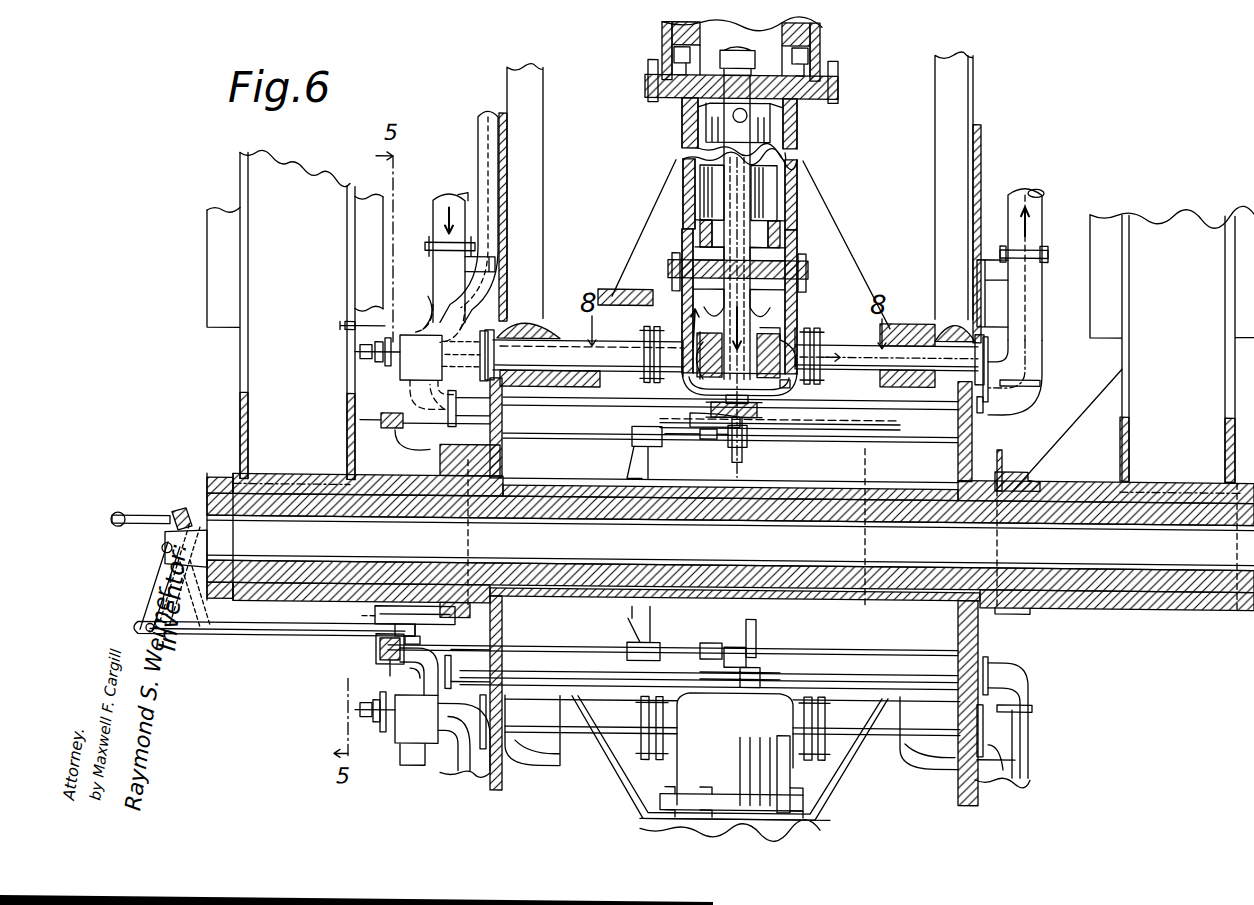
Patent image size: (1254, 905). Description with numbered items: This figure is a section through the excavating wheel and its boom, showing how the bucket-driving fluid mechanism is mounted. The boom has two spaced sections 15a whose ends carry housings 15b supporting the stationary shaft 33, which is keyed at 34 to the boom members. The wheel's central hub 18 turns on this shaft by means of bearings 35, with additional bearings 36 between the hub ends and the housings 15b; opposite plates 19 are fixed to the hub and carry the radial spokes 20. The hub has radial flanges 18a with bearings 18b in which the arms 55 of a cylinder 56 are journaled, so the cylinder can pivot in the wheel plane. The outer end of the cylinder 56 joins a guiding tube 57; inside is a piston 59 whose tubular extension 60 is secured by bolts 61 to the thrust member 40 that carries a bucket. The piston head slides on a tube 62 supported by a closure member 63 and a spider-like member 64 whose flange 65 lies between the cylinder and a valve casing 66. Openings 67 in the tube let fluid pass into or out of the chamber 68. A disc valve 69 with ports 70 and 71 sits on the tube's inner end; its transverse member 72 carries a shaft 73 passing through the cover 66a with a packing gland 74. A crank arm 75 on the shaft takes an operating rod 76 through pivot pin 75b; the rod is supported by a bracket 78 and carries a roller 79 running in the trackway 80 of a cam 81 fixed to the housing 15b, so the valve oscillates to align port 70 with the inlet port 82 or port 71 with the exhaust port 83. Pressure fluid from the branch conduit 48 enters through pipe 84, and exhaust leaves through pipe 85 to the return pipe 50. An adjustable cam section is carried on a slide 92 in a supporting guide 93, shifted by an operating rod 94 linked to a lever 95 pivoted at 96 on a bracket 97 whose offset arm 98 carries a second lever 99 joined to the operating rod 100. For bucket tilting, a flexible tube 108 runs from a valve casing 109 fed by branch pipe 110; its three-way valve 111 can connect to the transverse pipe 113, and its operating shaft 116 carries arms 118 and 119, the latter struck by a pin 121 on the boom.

The boom section 15a is at (240, 416).
The housing 15b is at (462, 470).
The central hub 18 is at (905, 474).
The radial flange 18a is at (502, 455).
The bearing 18b is at (546, 310).
The plate 19 is at (506, 164).
The spoke 20 is at (536, 98).
The stationary shaft 33 is at (1148, 582).
The key 34 is at (292, 481).
The bearing 35 is at (532, 493).
The bearing 36 is at (474, 493).
The thrust member 40 is at (821, 28).
The branch conduit 48 is at (450, 196).
The branch exhaust pipe 50 is at (1044, 200).
The arm 55 is at (652, 272).
The cylinder 56 is at (800, 186).
The guiding tube 57 is at (836, 58).
The piston 59 is at (796, 224).
The tubular extension 60 is at (800, 146).
The bolt 61 is at (826, 66).
The tube 62 is at (724, 174).
The piston closure member 63 is at (798, 106).
The spider-like member 64 is at (790, 248).
The flange 65 is at (808, 272).
The valve casing 66 is at (798, 294).
The cover 66a is at (780, 404).
The opening 67 is at (733, 108).
The chamber 68 is at (778, 182).
The valve 69 is at (760, 400).
The port 70 is at (696, 380).
The port 71 is at (782, 380).
The transverse member 72 is at (752, 412).
The shaft 73 is at (745, 440).
The packing gland 74 is at (690, 412).
The crank arm 75 is at (735, 440).
The pivot pin 75b is at (706, 432).
The operating rod 76 is at (586, 435).
The bracket 78 is at (632, 440).
The roller 79 is at (392, 409).
The cam trackway 80 is at (380, 418).
The cam 81 is at (412, 432).
The fluid inlet port 82 is at (690, 330).
The fluid exhaust port 83 is at (786, 326).
The pipe 84 is at (572, 336).
The pipe 85 is at (838, 362).
The slide 92 is at (385, 640).
The supporting guide 93 is at (375, 603).
The operating rod 94 is at (268, 633).
The lever 95 is at (165, 590).
The pivot 96 is at (160, 546).
The bracket 97 is at (192, 575).
The offset arm 98 is at (182, 506).
The lever 99 is at (140, 514).
The operating rod 100 is at (114, 512).
The flexible tube 108 is at (483, 118).
The valve casing 109 is at (412, 292).
The branch pipe 110 is at (428, 290).
The three-way valve 111 is at (436, 366).
The pipe 113 is at (1022, 390).
The operating shaft 116 is at (358, 348).
The arm 118 is at (385, 352).
The arm 119 is at (375, 344).
The pin 121 is at (368, 322).